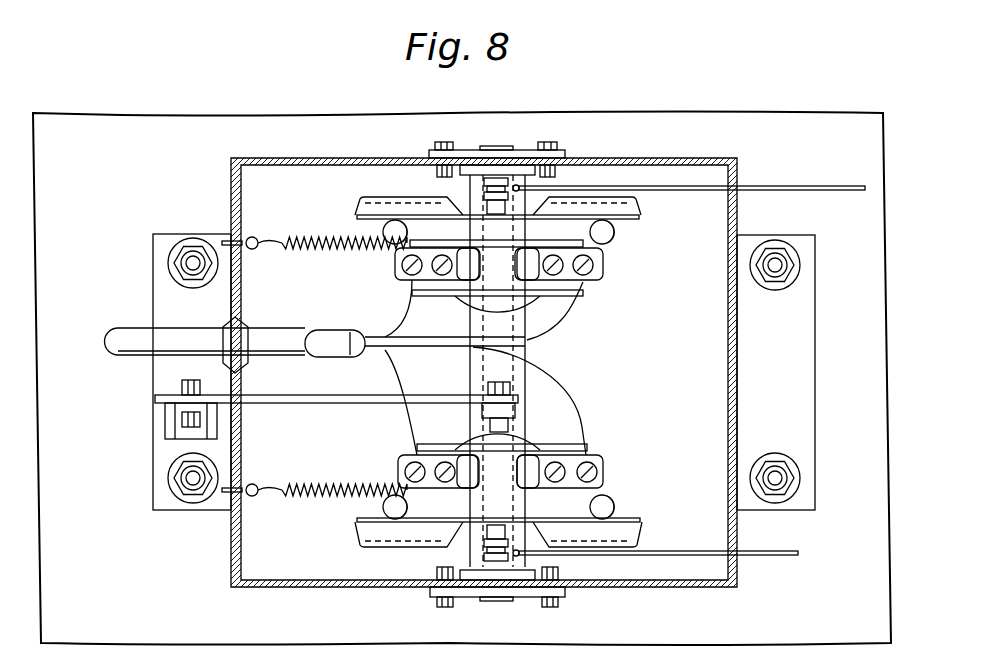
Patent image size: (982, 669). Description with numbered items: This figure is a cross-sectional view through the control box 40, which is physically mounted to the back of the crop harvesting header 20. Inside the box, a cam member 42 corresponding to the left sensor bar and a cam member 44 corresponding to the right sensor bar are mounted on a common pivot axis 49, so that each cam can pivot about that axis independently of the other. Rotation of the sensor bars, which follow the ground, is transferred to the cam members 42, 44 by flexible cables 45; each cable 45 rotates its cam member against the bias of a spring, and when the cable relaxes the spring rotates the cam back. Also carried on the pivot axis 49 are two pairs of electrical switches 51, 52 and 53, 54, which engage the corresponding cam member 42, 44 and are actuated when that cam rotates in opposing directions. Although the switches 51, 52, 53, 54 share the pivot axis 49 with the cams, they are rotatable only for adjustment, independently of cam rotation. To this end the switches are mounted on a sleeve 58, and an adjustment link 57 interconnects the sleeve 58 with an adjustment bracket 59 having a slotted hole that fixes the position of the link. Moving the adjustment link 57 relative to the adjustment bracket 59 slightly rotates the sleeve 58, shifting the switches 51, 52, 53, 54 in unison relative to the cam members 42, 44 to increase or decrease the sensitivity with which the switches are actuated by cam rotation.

The crop harvesting header 20 is at (140, 113).
The control box 40 is at (270, 158).
The cam member 42 is at (598, 205).
The cam member 44 is at (612, 535).
The flexible cable 45 is at (785, 186).
The pivot axis 49 is at (495, 147).
The electrical switch 51 is at (380, 232).
The electrical switch 52 is at (592, 276).
The electrical switch 53 is at (410, 468).
The electrical switch 54 is at (612, 505).
The adjustment link 57 is at (345, 395).
The sleeve 58 is at (520, 352).
The adjustment bracket 59 is at (175, 420).